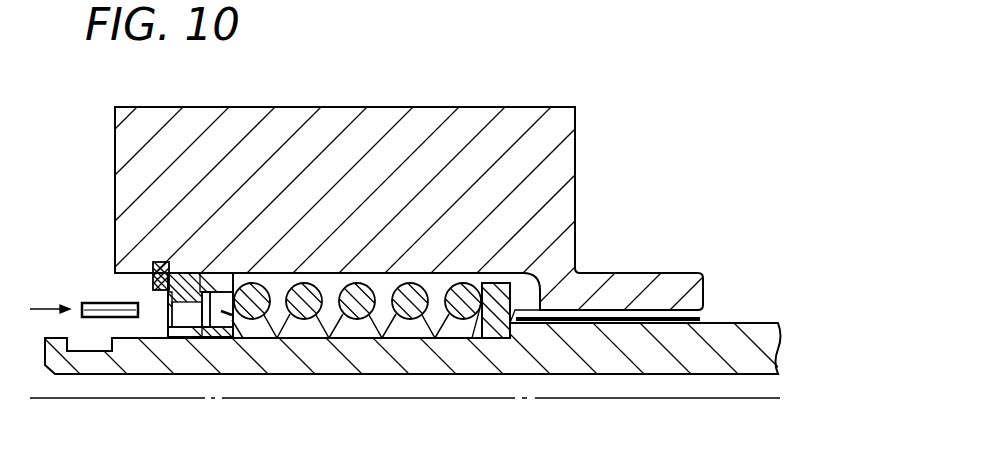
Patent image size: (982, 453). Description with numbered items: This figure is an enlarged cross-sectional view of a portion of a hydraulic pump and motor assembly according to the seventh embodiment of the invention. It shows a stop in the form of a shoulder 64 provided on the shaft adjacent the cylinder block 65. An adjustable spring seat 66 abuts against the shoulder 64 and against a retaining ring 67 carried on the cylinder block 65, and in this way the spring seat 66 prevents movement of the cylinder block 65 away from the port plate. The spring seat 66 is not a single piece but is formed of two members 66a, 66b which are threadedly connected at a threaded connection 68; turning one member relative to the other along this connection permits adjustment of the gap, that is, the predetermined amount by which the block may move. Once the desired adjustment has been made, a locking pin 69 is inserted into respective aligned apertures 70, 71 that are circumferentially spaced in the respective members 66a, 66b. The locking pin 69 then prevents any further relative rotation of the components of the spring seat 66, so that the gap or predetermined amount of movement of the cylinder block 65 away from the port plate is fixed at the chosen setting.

The shoulder 64 is at (220, 335).
The cylinder block 65 is at (540, 158).
The adjustable spring seat 66 is at (170, 318).
The spring seat member 66a is at (204, 273).
The spring seat member 66b is at (185, 337).
The retaining ring 67 is at (155, 266).
The threaded connection 68 is at (167, 293).
The locking pin 69 is at (80, 296).
The aperture 70 is at (168, 337).
The aperture 71 is at (237, 337).